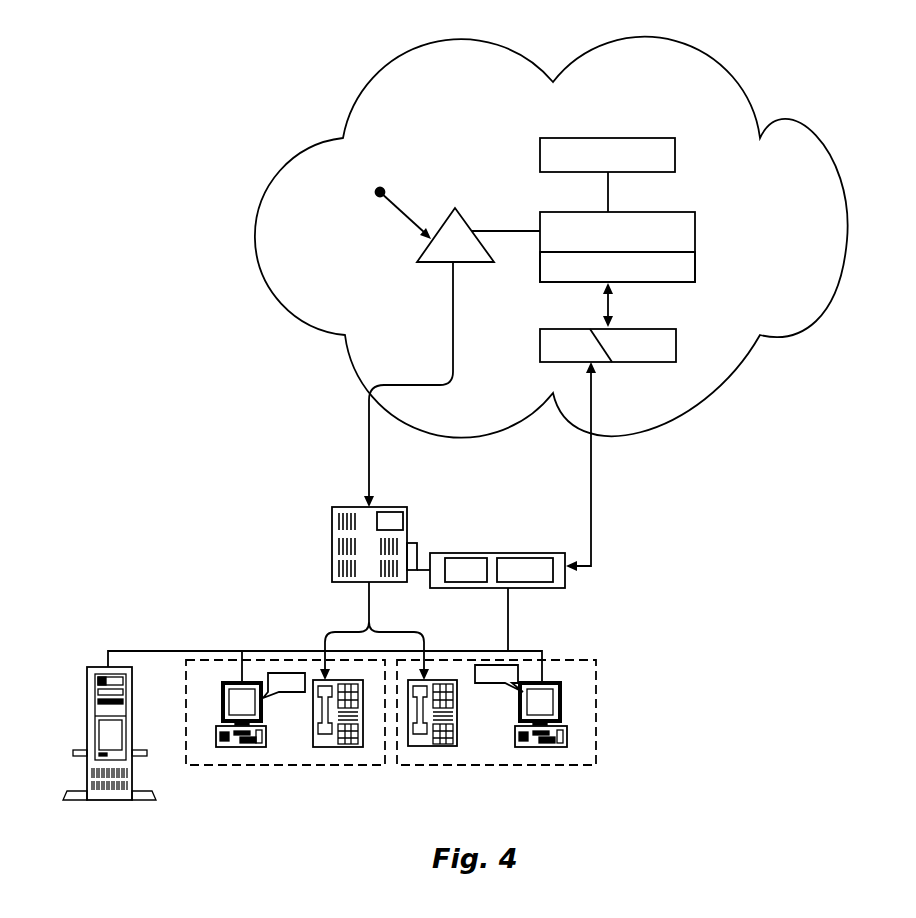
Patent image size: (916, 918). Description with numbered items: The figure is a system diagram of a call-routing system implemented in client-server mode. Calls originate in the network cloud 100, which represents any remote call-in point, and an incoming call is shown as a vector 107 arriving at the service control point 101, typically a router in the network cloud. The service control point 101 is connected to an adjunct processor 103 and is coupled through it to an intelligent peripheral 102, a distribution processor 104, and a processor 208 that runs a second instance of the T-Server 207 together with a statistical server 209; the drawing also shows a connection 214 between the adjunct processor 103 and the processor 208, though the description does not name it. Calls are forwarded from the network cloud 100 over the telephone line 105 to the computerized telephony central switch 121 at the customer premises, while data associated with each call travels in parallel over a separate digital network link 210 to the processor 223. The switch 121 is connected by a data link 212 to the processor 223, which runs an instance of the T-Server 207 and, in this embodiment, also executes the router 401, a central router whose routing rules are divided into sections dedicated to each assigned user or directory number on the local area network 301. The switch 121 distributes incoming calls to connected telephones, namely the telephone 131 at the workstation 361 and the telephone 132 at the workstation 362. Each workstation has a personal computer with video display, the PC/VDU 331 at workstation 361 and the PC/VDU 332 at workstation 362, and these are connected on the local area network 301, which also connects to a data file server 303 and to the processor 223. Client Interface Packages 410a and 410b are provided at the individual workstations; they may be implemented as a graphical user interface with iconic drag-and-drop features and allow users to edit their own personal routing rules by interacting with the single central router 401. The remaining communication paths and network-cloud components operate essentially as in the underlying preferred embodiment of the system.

The network cloud 100 is at (783, 130).
The service control point 101 is at (455, 206).
The intelligent peripheral 102 is at (676, 157).
The adjunct processor 103 is at (697, 231).
The distribution processor 104 is at (697, 258).
The telephone line 105 is at (367, 457).
The vector 107 is at (407, 222).
The computerized telephony central switch 121 is at (330, 560).
The T-Server 207 is at (575, 328).
The processor 208 is at (540, 347).
The statistical server 209 is at (630, 363).
The digital network link 210 is at (592, 558).
The data link 212 is at (413, 543).
The adjunct processor to record link 214 is at (611, 302).
The processor 223 is at (488, 588).
The router 401 is at (525, 588).
The local area network 301 is at (120, 650).
The data file server 303 is at (87, 705).
The PC/VDU 331 is at (217, 735).
The PC/VDU 332 is at (568, 737).
The workstation 361 is at (245, 766).
The workstation 362 is at (460, 766).
The telephone 131 is at (313, 718).
The telephone 132 is at (457, 702).
The Client Interface Package 410a is at (518, 673).
The Client Interface Package 410b is at (288, 673).